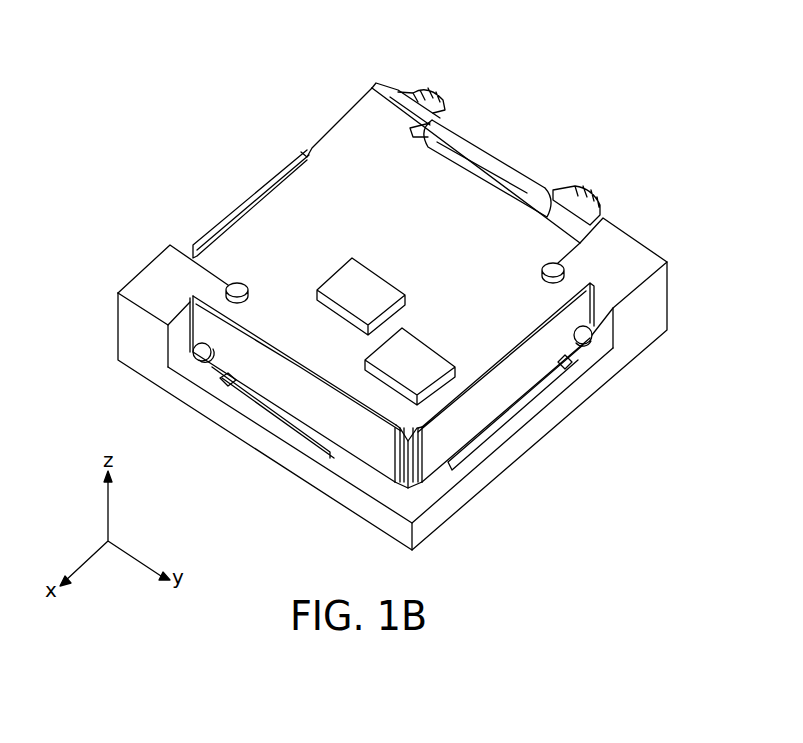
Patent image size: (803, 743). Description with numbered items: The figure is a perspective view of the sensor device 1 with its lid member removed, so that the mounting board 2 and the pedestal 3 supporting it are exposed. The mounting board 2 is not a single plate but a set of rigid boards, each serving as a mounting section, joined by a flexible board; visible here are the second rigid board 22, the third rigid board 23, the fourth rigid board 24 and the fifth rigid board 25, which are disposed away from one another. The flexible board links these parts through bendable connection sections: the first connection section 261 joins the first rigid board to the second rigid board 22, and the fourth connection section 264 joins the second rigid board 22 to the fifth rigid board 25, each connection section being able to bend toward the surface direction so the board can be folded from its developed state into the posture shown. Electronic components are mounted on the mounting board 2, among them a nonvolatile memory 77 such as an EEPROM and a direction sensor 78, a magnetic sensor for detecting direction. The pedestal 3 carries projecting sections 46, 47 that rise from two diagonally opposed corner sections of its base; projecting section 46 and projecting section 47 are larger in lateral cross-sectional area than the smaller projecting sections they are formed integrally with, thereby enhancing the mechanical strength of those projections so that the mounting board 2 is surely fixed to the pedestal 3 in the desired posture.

The sensor device 1 is at (604, 132).
The mounting board 2 is at (319, 117).
The pedestal 3 is at (183, 410).
The second rigid board 22 is at (462, 198).
The third rigid board 23 is at (298, 405).
The fourth rigid board 24 is at (517, 380).
The fifth rigid board 25 is at (588, 198).
The projecting section 46 is at (146, 292).
The projecting section 47 is at (640, 256).
The nonvolatile memory 77 is at (357, 302).
The direction sensor 78 is at (424, 368).
The first connection section 261 is at (262, 187).
The fourth connection section 264 is at (527, 193).